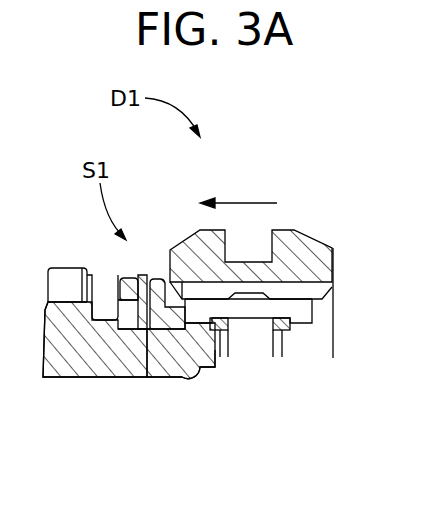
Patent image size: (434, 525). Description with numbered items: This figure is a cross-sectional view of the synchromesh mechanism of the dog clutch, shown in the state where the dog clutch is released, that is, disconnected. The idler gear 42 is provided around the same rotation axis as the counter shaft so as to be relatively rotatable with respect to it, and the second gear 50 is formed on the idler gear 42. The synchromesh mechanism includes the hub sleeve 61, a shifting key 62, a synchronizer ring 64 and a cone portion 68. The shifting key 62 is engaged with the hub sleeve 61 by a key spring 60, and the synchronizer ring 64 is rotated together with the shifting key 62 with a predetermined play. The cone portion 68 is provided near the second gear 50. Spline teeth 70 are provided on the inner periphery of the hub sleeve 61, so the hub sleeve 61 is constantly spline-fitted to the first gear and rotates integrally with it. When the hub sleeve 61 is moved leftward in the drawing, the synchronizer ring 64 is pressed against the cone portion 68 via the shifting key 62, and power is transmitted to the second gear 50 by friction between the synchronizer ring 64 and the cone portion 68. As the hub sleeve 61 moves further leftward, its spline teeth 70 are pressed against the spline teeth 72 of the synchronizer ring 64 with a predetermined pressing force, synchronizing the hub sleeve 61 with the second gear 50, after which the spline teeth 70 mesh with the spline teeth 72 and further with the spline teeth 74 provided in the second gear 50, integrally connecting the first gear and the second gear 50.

The idler gear 42 is at (73, 360).
The second gear 50 is at (127, 315).
The key spring 60 is at (287, 324).
The hub sleeve 61 is at (302, 248).
The shifting key 62 is at (251, 307).
The synchronizer ring 64 is at (162, 322).
The cone portion 68 is at (203, 357).
The spline teeth 70 is at (295, 288).
The spline teeth 72 is at (153, 280).
The spline teeth 74 is at (122, 278).